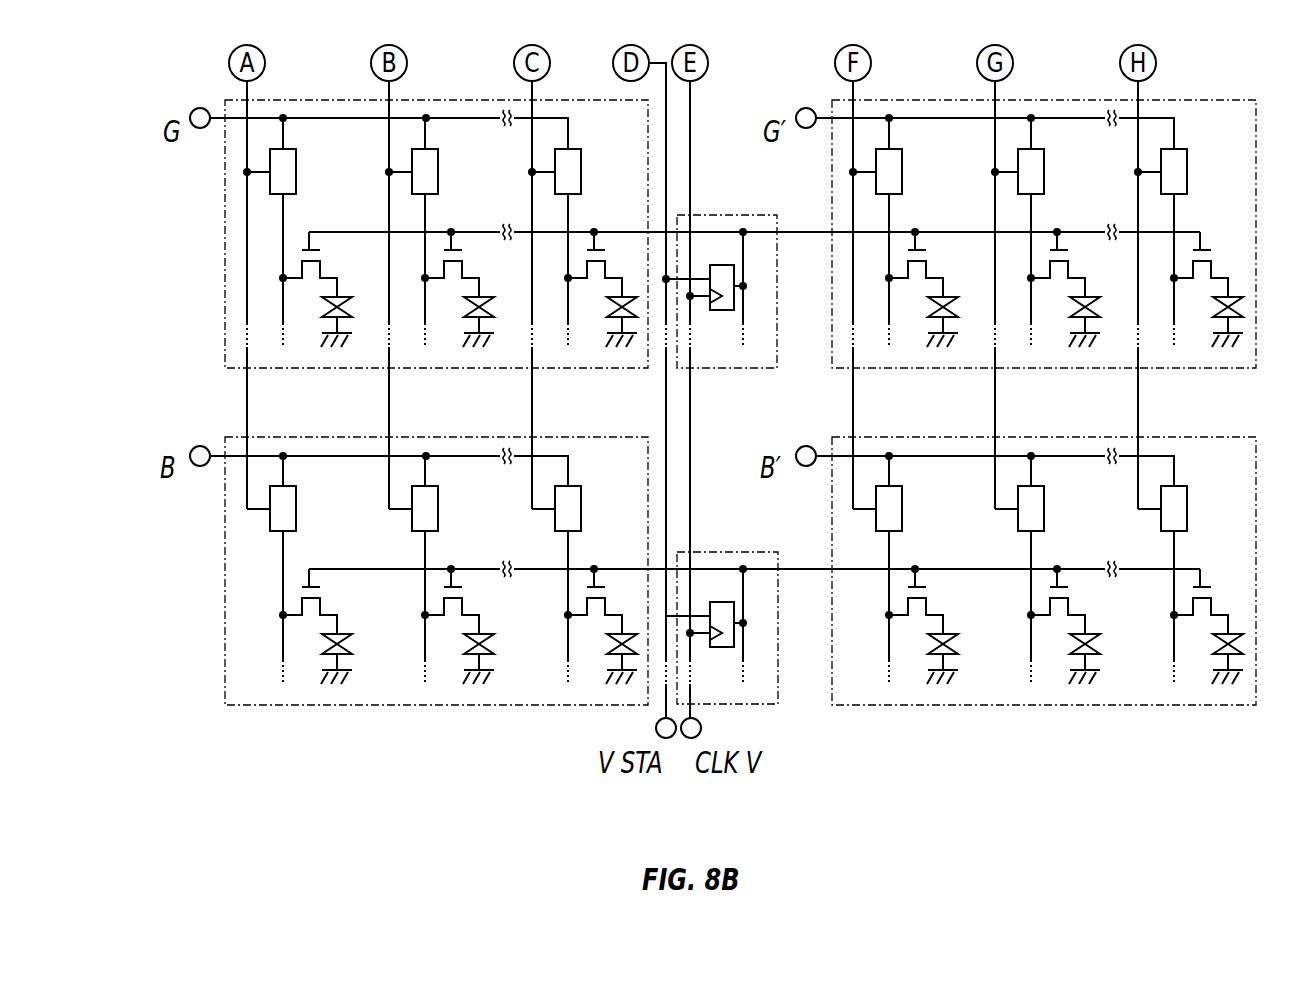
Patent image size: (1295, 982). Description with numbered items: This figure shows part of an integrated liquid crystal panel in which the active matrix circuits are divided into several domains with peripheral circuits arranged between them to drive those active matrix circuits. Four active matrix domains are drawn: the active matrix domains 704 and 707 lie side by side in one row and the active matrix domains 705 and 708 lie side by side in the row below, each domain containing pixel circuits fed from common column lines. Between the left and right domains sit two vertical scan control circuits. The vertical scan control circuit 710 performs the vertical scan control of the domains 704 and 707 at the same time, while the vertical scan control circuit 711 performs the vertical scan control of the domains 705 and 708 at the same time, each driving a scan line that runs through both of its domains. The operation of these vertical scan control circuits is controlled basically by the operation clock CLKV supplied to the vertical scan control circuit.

The active matrix domain 704 is at (238, 305).
The active matrix domain 705 is at (238, 647).
The active matrix domain 707 is at (1167, 358).
The active matrix domain 708 is at (1168, 700).
The vertical scan control circuit 710 is at (758, 359).
The vertical scan control circuit 711 is at (770, 702).